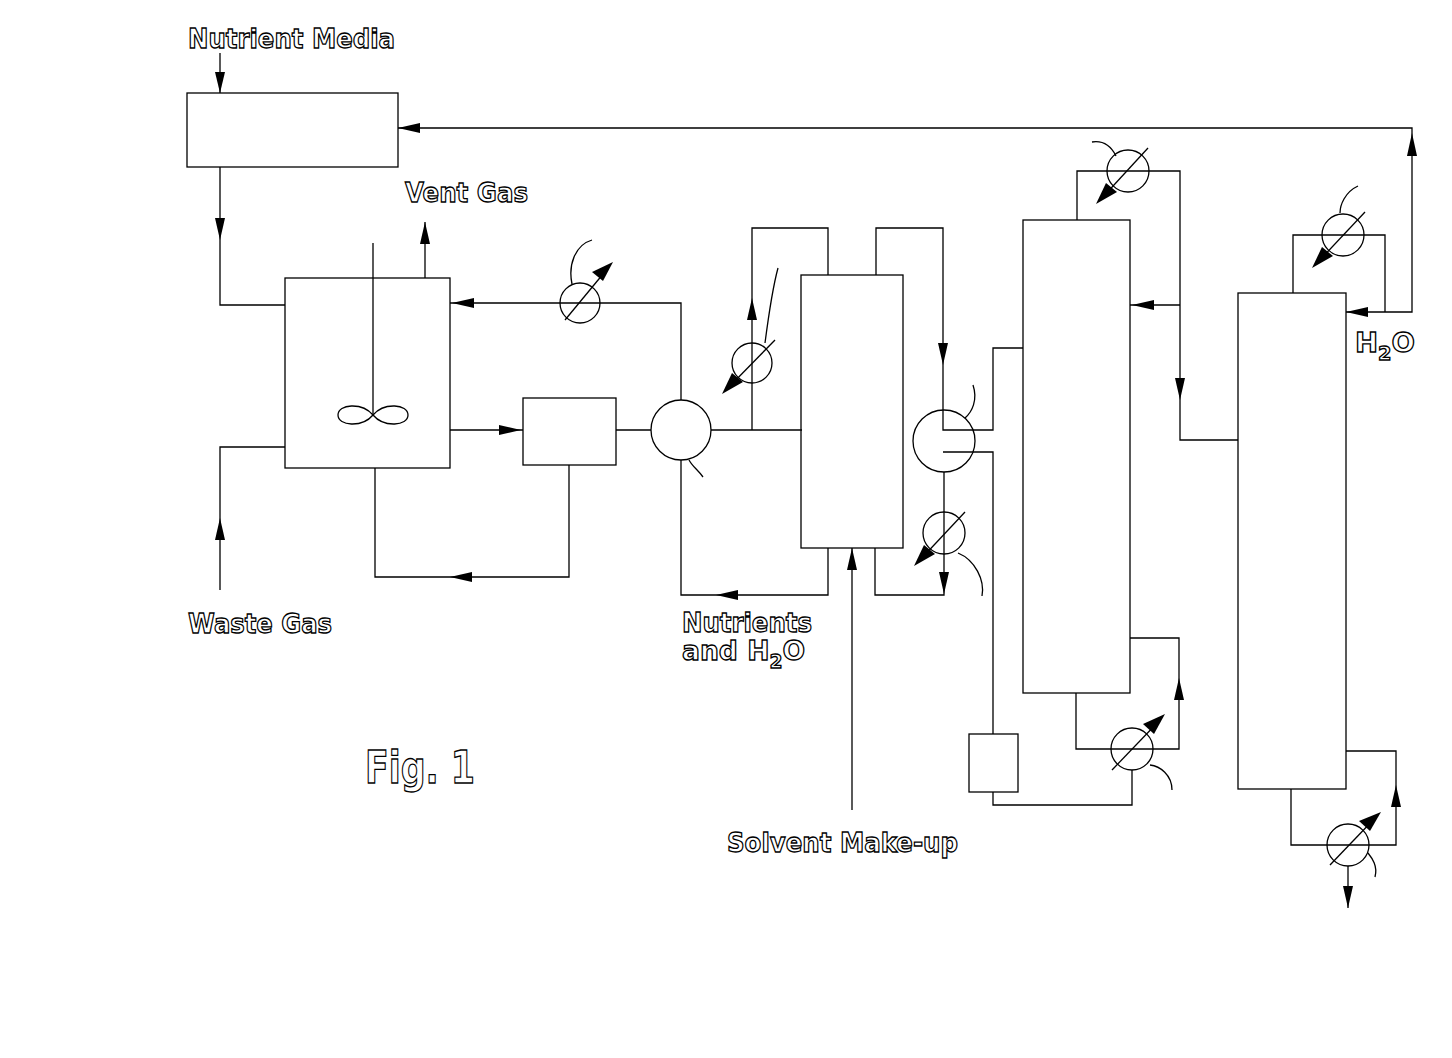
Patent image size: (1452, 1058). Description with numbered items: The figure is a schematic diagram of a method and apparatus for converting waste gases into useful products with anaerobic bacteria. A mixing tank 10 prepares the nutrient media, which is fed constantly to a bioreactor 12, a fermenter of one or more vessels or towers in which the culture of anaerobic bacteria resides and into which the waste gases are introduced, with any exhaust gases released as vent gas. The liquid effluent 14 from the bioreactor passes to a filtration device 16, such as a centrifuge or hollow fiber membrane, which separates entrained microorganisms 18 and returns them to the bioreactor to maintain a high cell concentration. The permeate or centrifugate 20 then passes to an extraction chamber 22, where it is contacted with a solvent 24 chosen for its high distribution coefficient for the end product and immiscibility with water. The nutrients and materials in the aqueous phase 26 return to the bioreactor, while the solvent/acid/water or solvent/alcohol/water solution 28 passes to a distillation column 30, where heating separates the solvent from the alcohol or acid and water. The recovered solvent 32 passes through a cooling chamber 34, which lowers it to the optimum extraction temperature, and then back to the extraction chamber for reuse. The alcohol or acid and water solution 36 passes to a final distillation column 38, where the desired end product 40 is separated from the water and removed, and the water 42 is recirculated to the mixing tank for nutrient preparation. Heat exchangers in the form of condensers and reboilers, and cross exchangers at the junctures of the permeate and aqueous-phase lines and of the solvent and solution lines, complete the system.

The mixing tank 10 is at (352, 93).
The bioreactor 12 is at (430, 305).
The liquid effluent 14 is at (462, 430).
The filtration device 16 is at (568, 410).
The microorganisms 18 is at (473, 578).
The permeate or centrifugate 20 is at (648, 432).
The extraction chamber 22 is at (862, 300).
The solvent 24 is at (876, 570).
The aqueous phase 26 is at (681, 520).
The solvent/acid/water or solvent/alcohol/water solution 28 is at (943, 275).
The distillation column 30 is at (1100, 500).
The solvent 32 is at (1076, 717).
The cooling chamber 34 is at (991, 770).
The alcohol or acid and water solution 36 is at (1180, 373).
The final distillation column 38 is at (1346, 585).
The end product 40 is at (1346, 871).
The water 42 is at (1237, 129).